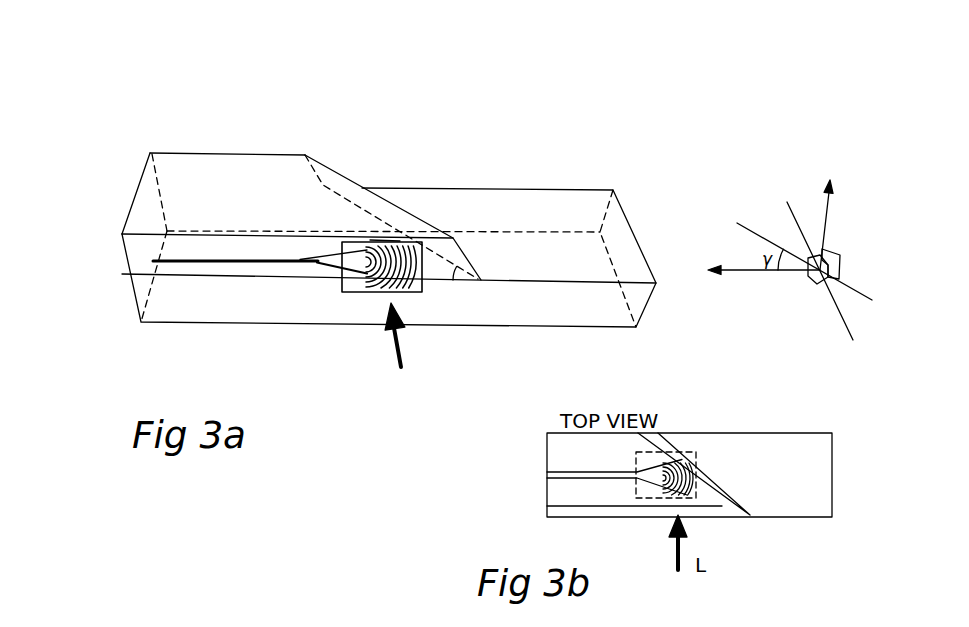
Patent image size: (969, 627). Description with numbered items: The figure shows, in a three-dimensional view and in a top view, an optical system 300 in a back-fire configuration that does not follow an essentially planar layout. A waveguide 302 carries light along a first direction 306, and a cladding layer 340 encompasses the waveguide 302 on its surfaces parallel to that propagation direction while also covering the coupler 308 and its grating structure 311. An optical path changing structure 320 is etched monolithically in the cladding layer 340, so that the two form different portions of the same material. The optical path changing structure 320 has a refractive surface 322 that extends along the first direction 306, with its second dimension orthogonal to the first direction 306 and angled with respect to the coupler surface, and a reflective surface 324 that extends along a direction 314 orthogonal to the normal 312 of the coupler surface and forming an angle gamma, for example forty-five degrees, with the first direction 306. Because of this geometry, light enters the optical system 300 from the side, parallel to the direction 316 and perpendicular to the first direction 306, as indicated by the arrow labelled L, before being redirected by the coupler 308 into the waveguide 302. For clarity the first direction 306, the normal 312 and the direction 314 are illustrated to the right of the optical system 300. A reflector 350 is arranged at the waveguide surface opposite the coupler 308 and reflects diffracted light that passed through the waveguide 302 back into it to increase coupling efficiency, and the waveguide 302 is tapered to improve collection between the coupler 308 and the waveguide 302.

The optical system 300 is at (145, 81).
The waveguide 302 is at (246, 259).
The first direction 306 is at (772, 271).
The coupler 308 is at (384, 239).
The grating structure 311 is at (407, 263).
The normal 312 is at (839, 206).
The direction 314 is at (778, 245).
The direction 316 is at (799, 218).
The optical path changing structure 320 is at (221, 137).
The refractive surface 322 is at (137, 253).
The reflective surface 324 is at (325, 180).
The cladding layer 340 is at (167, 319).
The reflector 350 is at (367, 291).